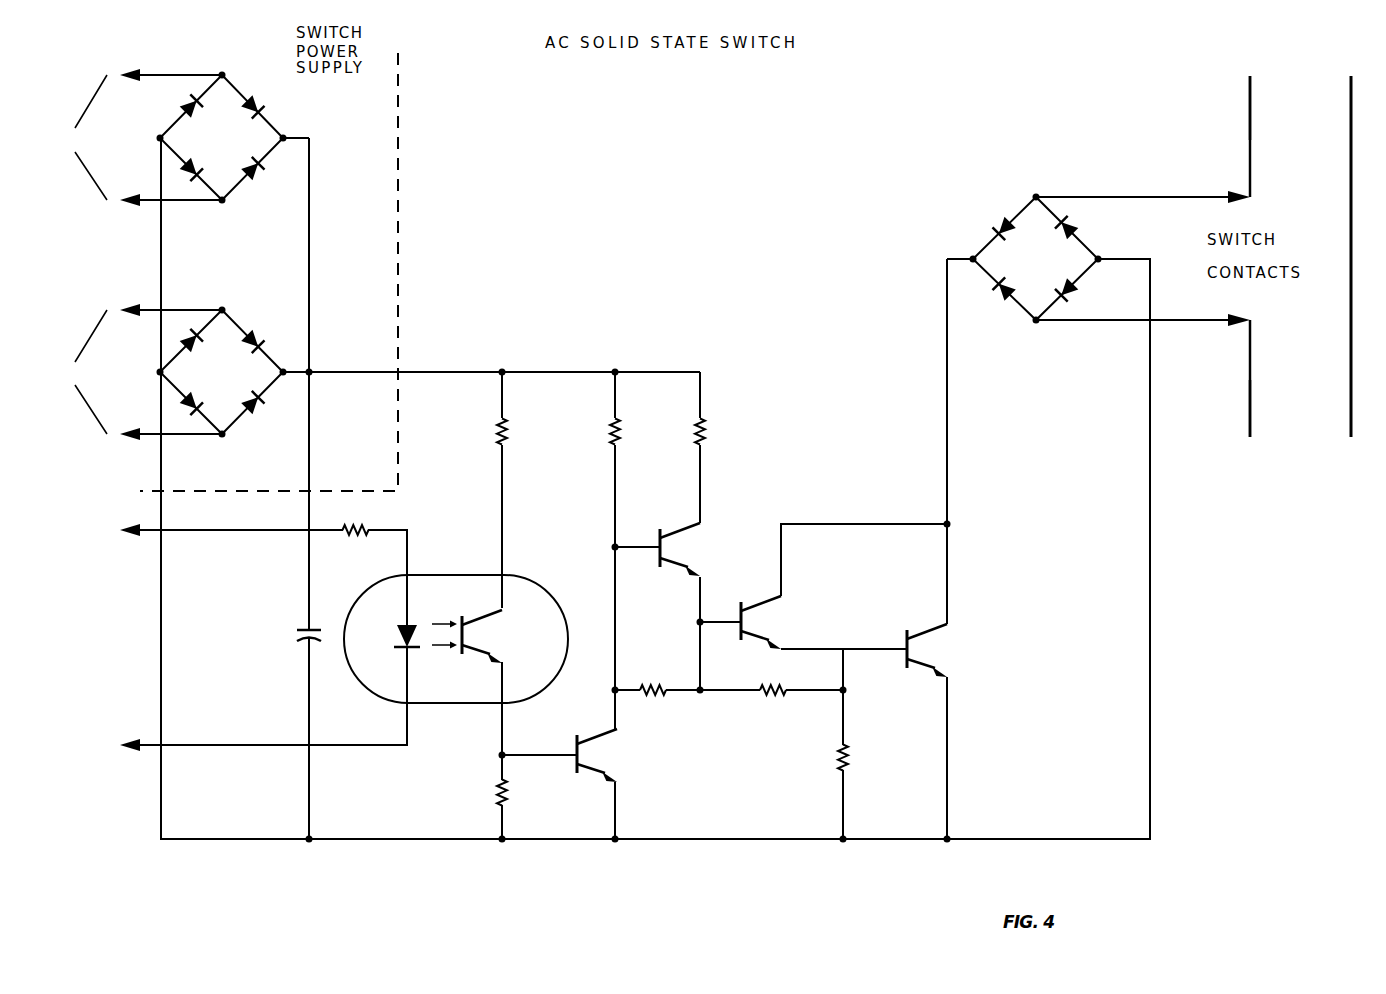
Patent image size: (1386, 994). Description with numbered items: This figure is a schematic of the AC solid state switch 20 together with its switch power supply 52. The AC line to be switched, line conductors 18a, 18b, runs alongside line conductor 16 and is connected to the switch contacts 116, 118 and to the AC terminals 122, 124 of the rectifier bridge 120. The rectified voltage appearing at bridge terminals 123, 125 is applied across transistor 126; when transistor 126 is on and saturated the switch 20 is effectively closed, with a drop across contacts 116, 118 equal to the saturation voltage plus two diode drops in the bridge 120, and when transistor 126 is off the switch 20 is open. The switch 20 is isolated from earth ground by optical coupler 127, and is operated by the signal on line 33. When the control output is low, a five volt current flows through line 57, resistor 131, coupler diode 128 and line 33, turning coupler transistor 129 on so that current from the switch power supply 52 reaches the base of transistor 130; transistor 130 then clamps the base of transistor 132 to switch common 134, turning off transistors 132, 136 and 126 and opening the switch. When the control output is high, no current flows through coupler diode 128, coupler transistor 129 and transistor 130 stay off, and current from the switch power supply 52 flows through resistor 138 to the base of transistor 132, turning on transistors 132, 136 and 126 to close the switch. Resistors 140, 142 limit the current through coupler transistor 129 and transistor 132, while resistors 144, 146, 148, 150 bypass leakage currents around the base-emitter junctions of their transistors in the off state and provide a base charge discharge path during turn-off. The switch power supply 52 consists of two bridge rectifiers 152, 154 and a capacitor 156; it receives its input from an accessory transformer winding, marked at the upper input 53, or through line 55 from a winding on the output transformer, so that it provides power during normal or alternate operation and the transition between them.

The AC solid state switch 20 is at (629, 140).
The switch power supply 52 is at (352, 140).
The power supply input terminals 53 is at (137, 137).
The line 55 is at (137, 372).
The bridge rectifier 152 is at (227, 181).
The bridge rectifier 154 is at (227, 331).
The line 57 is at (262, 531).
The line 33 is at (258, 745).
The resistor 131 is at (368, 524).
The capacitor 156 is at (295, 634).
The optical coupler 127 is at (443, 589).
The coupler diode 128 is at (388, 644).
The coupler transistor 129 is at (492, 638).
The resistor 140 is at (495, 437).
The resistor 138 is at (610, 437).
The resistor 142 is at (694, 434).
The transistor 132 is at (675, 553).
The transistor 136 is at (752, 628).
The transistor 126 is at (915, 650).
The transistor 130 is at (590, 757).
The resistor 144 is at (658, 686).
The resistor 146 is at (780, 696).
The resistor 148 is at (850, 758).
The resistor 150 is at (492, 788).
The switch common 134 is at (1150, 725).
The rectifier bridge 120 is at (1022, 215).
The AC terminal 122 is at (1038, 193).
The bridge terminal 123 is at (970, 256).
The AC terminal 124 is at (1040, 330).
The bridge terminal 125 is at (1100, 256).
The switch contact 116 is at (1254, 195).
The switch contact 118 is at (1253, 322).
The line conductor 18a is at (1252, 118).
The line conductor 18b is at (1252, 418).
The line conductor 16 is at (1353, 210).